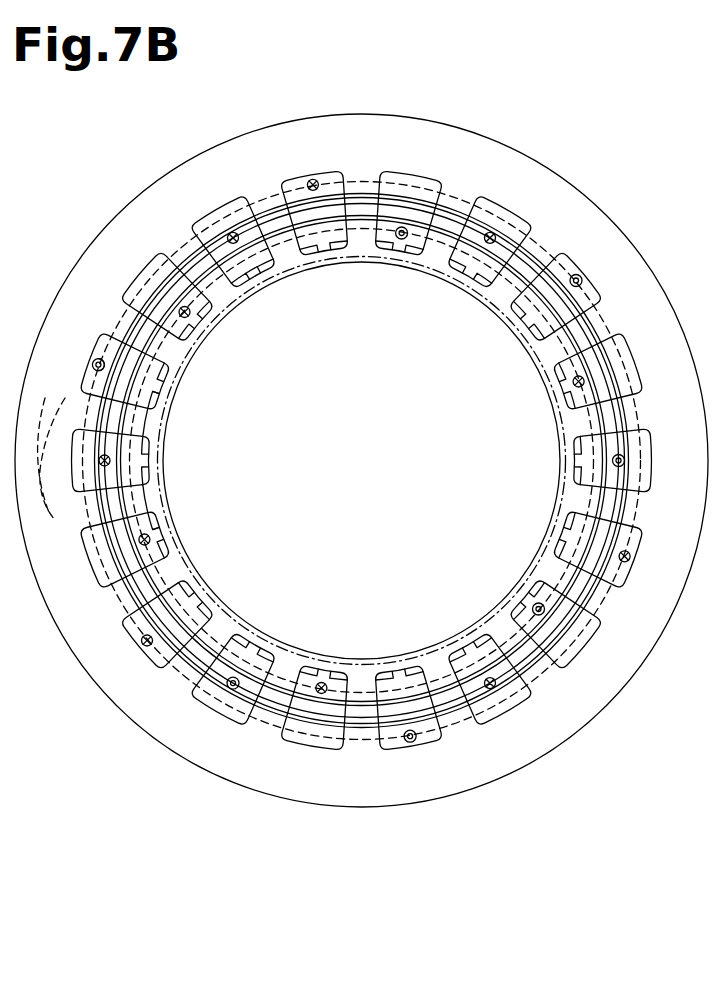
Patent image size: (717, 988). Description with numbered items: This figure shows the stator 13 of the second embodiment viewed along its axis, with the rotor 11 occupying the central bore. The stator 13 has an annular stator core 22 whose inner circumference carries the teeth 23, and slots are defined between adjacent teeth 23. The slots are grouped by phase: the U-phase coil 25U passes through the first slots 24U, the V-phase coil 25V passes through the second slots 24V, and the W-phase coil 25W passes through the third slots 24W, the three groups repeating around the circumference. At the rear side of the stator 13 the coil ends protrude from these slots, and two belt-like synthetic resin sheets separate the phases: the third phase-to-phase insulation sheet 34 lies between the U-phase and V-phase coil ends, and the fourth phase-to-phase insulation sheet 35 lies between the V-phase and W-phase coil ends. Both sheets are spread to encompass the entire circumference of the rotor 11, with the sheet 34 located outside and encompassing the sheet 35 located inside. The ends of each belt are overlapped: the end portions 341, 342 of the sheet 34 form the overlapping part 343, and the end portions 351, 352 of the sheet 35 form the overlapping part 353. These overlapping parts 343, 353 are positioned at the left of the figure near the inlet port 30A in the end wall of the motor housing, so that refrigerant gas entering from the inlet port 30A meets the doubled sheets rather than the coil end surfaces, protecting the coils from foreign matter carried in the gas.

The rotor 11 is at (356, 668).
The stator 13 is at (573, 101).
The stator core 22 is at (643, 283).
The teeth 23 is at (527, 348).
The first slots 24U is at (325, 172).
The second slots 24V is at (212, 215).
The third slots 24W is at (397, 172).
The U-phase coil 25U is at (258, 178).
The V-phase coil 25V is at (353, 200).
The W-phase coil 25W is at (432, 272).
The inlet port 30A is at (38, 492).
The third phase-to-phase insulation sheet 34 is at (446, 208).
The fourth phase-to-phase insulation sheet 35 is at (255, 273).
The end portion 341 is at (104, 357).
The end portion 342 is at (148, 510).
The overlapping part 343 is at (95, 420).
The end portion 351 is at (158, 388).
The end portion 352 is at (158, 490).
The overlapping part 353 is at (160, 412).